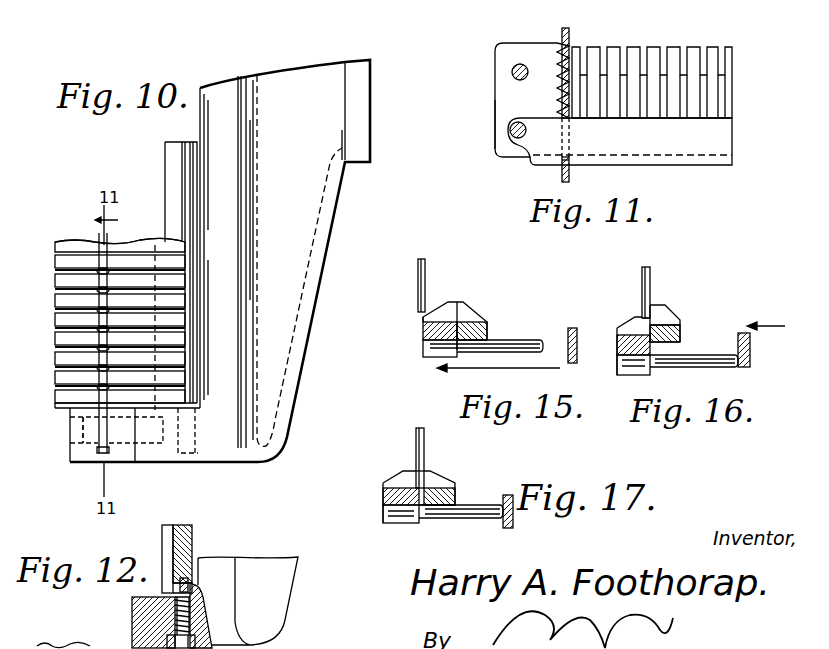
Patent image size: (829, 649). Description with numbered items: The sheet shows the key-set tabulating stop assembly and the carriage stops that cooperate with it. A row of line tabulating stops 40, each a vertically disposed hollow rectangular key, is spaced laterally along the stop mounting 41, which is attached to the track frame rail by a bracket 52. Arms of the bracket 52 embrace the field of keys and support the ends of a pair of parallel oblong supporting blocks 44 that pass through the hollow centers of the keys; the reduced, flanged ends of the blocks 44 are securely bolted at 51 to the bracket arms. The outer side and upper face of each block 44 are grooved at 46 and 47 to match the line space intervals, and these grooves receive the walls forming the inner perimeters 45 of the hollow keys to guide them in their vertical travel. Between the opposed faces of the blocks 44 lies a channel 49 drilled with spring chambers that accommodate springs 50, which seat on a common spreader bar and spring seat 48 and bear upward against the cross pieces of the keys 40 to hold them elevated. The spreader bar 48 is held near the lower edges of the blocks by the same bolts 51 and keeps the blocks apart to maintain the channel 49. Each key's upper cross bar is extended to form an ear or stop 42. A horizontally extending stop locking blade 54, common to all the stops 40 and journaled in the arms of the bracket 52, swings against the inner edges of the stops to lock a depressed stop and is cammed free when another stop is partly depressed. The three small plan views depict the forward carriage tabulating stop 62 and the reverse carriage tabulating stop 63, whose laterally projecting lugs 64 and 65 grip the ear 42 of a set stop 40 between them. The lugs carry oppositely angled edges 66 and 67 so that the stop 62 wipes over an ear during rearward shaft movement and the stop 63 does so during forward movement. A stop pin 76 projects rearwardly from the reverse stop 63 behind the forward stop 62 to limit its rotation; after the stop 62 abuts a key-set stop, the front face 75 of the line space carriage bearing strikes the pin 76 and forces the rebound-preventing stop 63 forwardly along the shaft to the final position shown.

In FIG. 11, the line tabulating stop 40 is at (562, 37).
In FIG. 15, the line tabulating stop 40 is at (418, 275).
In FIG. 16, the line tabulating stop 40 is at (643, 267).
In FIG. 17, the line tabulating stop 40 is at (420, 428).
In FIG. 10, the stop mounting 41 is at (153, 230).
In FIG. 15, the ear or stop 42 is at (420, 313).
In FIG. 16, the ear or stop 42 is at (648, 302).
In FIG. 17, the ear or stop 42 is at (418, 475).
In FIG. 10, the supporting block 44 is at (72, 255).
In FIG. 11, the supporting block 44 is at (502, 57).
In FIG. 11, the inner perimeter 45 is at (562, 162).
In FIG. 10, the groove 46 is at (102, 312).
In FIG. 10, the groove 47 is at (70, 350).
In FIG. 11, the groove 47 is at (703, 47).
In FIG. 10, the spreader bar and spring seat 48 is at (98, 406).
In FIG. 11, the spreader bar and spring seat 48 is at (693, 143).
In FIG. 10, the channel 49 is at (55, 399).
In FIG. 11, the channel 49 is at (507, 107).
In FIG. 11, the spring 50 is at (558, 98).
In FIG. 10, the bolt 51 is at (72, 437).
In FIG. 11, the bolt 51 is at (512, 74).
In FIG. 10, the bracket 52 is at (163, 452).
In FIG. 12, the bracket 52 is at (132, 617).
In FIG. 10, the stop locking blade 54 is at (182, 203).
In FIG. 12, the stop locking blade 54 is at (192, 542).
In FIG. 15, the forward carriage tabulating stop 62 is at (488, 328).
In FIG. 16, the forward carriage tabulating stop 62 is at (680, 337).
In FIG. 17, the forward carriage tabulating stop 62 is at (457, 495).
In FIG. 15, the reverse carriage tabulating stop 63 is at (423, 337).
In FIG. 16, the reverse carriage tabulating stop 63 is at (617, 340).
In FIG. 17, the reverse carriage tabulating stop 63 is at (383, 497).
In FIG. 15, the lug 64 is at (492, 314).
In FIG. 16, the lug 64 is at (683, 311).
In FIG. 17, the lug 64 is at (453, 473).
In FIG. 15, the lug 65 is at (437, 318).
In FIG. 16, the lug 65 is at (628, 298).
In FIG. 17, the lug 65 is at (393, 484).
In FIG. 15, the angled edge 66 is at (483, 317).
In FIG. 16, the angled edge 66 is at (665, 307).
In FIG. 17, the angled edge 66 is at (438, 480).
In FIG. 15, the angled edge 67 is at (423, 306).
In FIG. 16, the angled edge 67 is at (622, 329).
In FIG. 17, the angled edge 67 is at (380, 480).
In FIG. 15, the front face 75 is at (573, 327).
In FIG. 16, the front face 75 is at (751, 350).
In FIG. 17, the front face 75 is at (506, 528).
In FIG. 15, the stop pin 76 is at (535, 342).
In FIG. 16, the stop pin 76 is at (708, 367).
In FIG. 17, the stop pin 76 is at (462, 518).